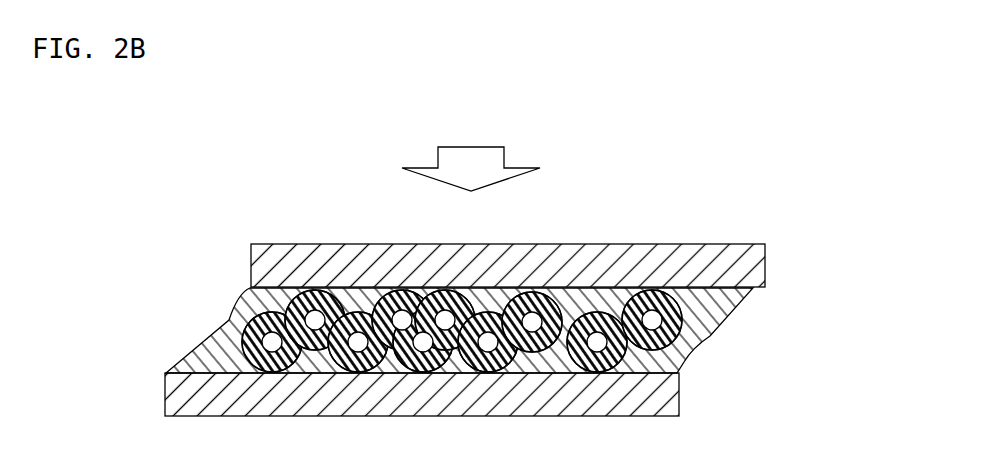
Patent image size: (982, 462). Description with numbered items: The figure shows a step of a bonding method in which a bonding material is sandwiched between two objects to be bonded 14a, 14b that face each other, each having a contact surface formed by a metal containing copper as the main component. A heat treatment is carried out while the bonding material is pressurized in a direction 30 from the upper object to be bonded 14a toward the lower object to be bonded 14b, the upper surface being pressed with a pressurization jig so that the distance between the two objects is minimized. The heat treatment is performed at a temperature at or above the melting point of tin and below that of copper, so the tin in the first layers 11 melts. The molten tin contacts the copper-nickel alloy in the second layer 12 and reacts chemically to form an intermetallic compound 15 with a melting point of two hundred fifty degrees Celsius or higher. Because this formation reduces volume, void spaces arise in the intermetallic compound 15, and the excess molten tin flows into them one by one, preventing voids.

The first layer 11 is at (740, 308).
The second layer 12 is at (652, 320).
The object to be bonded 14a is at (747, 267).
The object to be bonded 14b is at (662, 394).
The intermetallic compound 15 is at (240, 337).
The direction 30 is at (483, 162).